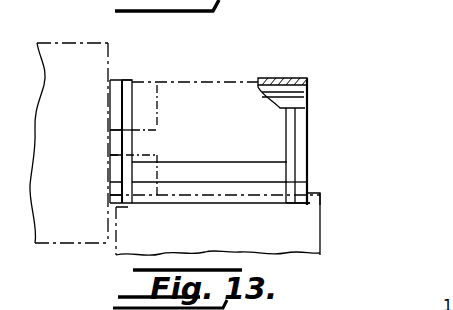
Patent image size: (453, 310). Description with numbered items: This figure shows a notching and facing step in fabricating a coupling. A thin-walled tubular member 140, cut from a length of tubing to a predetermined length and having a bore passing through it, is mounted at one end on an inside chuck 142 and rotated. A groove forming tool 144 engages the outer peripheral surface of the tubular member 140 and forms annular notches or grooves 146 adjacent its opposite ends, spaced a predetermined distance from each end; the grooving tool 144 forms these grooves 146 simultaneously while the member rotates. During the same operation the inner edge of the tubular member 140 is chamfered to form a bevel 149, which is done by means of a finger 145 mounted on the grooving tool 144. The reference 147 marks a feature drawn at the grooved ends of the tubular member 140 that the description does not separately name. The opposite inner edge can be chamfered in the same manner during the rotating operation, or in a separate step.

The tubular member 140 is at (226, 82).
The inside chuck 142 is at (91, 42).
The groove forming tool 144 is at (321, 238).
The finger 145 is at (321, 192).
The annular grooves 146 is at (129, 80).
The flange plate 147 is at (115, 80).
The bevel 149 is at (308, 88).